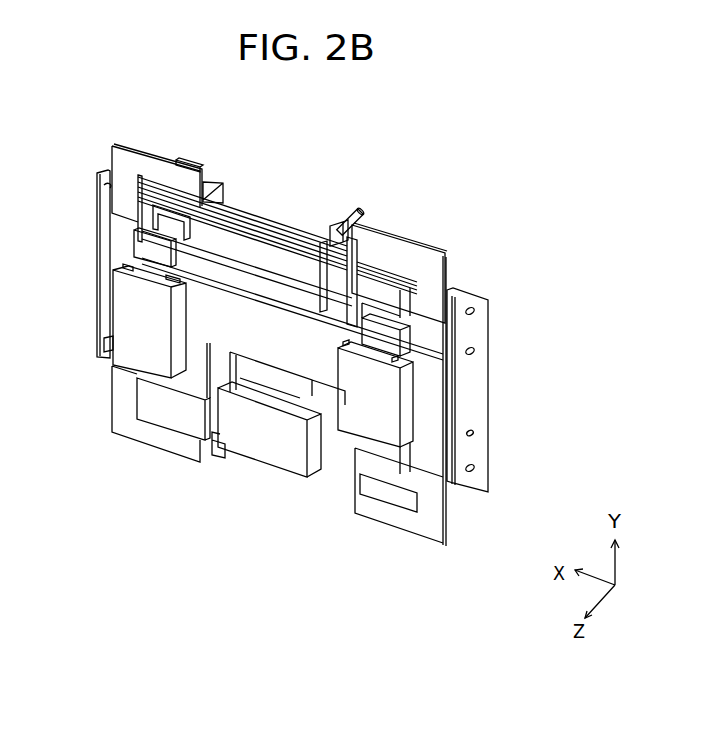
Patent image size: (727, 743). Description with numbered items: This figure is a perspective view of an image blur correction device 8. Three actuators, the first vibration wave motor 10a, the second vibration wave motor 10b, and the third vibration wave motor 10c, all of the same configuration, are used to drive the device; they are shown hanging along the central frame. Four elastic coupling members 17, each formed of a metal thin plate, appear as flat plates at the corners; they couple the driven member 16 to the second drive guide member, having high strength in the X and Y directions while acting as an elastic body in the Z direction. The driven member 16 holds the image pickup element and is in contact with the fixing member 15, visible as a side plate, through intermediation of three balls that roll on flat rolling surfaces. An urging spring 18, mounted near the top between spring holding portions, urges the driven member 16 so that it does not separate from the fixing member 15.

The image blur correction device 8 is at (521, 128).
The fixing member 15 is at (107, 275).
The driven member 16 is at (215, 180).
The elastic coupling member 17 is at (158, 165).
The urging spring 18 is at (343, 217).
The first vibration wave motor 10a is at (247, 445).
The second vibration wave motor 10b is at (130, 355).
The third vibration wave motor 10c is at (357, 430).